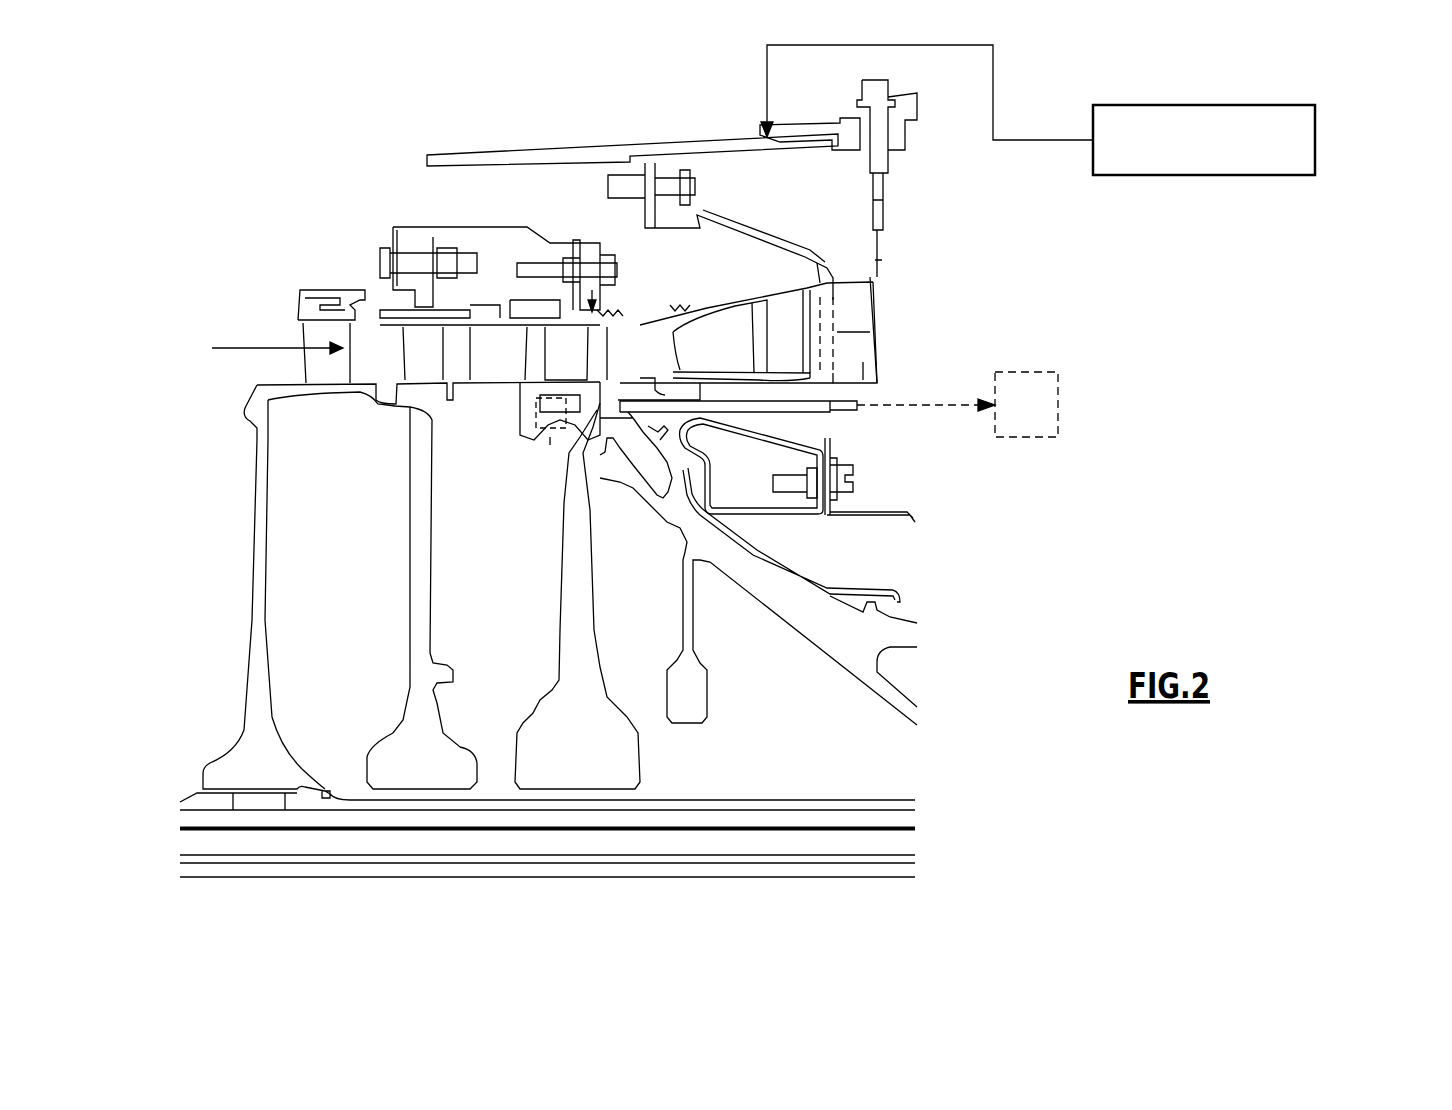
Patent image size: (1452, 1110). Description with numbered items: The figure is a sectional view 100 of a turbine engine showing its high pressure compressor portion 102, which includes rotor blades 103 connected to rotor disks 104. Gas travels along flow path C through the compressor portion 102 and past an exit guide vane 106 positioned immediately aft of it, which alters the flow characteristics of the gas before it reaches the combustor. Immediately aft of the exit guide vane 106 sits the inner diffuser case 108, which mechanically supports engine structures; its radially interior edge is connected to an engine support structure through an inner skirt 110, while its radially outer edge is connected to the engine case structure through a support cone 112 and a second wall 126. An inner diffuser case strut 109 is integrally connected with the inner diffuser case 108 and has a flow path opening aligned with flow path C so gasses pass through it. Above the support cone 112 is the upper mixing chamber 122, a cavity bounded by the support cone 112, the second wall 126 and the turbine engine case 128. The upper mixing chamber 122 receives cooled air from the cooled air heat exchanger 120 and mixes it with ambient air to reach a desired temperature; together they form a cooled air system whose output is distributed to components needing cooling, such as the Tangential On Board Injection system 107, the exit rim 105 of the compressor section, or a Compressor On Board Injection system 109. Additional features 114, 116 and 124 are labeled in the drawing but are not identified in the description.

The sectional view 100 is at (245, 245).
The high pressure compressor portion 102 is at (557, 357).
The rotor blades 103 is at (568, 490).
The rotor disks 104 is at (537, 420).
The exit rim 105 is at (592, 510).
The exit guide vane 106 is at (653, 353).
The Tangential On Board Injection (TOBI) system 107 is at (1033, 397).
The inner diffuser case 108 is at (863, 387).
The inner diffuser case strut 109 is at (550, 437).
The inner skirt 110 is at (882, 507).
The support cone 112 is at (733, 223).
The cavity 114 is at (837, 332).
The cooling flow 116 is at (592, 290).
The cooled air heat exchanger 120 is at (1315, 133).
The upper mixing chamber 122 is at (840, 230).
The passage 124 is at (786, 280).
The second wall 126 is at (883, 195).
The turbine engine case 128 is at (710, 140).